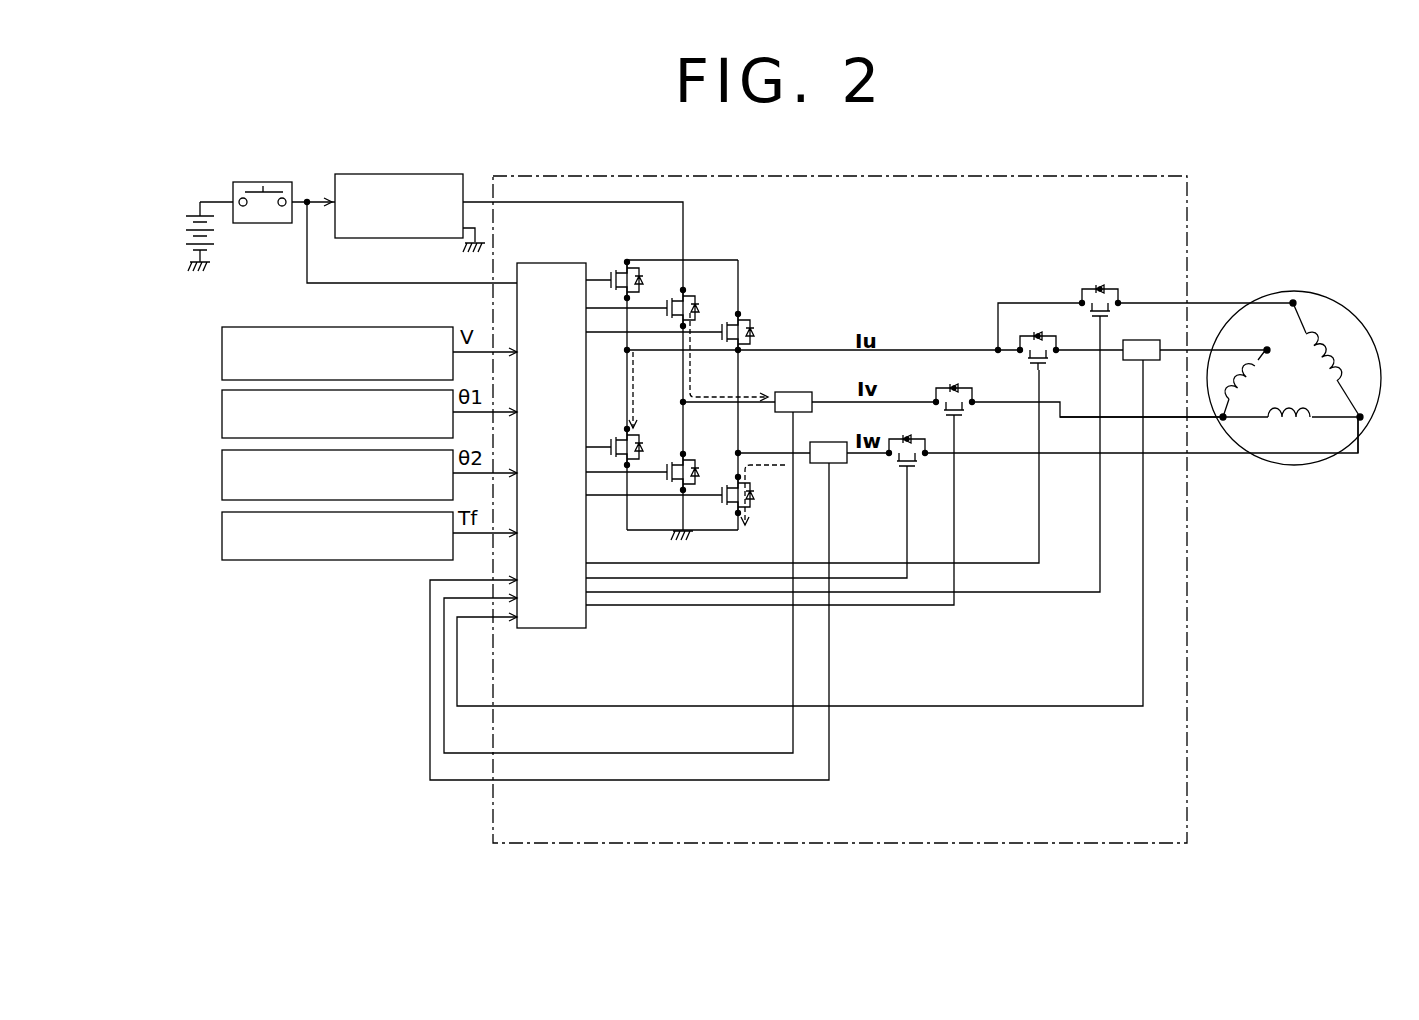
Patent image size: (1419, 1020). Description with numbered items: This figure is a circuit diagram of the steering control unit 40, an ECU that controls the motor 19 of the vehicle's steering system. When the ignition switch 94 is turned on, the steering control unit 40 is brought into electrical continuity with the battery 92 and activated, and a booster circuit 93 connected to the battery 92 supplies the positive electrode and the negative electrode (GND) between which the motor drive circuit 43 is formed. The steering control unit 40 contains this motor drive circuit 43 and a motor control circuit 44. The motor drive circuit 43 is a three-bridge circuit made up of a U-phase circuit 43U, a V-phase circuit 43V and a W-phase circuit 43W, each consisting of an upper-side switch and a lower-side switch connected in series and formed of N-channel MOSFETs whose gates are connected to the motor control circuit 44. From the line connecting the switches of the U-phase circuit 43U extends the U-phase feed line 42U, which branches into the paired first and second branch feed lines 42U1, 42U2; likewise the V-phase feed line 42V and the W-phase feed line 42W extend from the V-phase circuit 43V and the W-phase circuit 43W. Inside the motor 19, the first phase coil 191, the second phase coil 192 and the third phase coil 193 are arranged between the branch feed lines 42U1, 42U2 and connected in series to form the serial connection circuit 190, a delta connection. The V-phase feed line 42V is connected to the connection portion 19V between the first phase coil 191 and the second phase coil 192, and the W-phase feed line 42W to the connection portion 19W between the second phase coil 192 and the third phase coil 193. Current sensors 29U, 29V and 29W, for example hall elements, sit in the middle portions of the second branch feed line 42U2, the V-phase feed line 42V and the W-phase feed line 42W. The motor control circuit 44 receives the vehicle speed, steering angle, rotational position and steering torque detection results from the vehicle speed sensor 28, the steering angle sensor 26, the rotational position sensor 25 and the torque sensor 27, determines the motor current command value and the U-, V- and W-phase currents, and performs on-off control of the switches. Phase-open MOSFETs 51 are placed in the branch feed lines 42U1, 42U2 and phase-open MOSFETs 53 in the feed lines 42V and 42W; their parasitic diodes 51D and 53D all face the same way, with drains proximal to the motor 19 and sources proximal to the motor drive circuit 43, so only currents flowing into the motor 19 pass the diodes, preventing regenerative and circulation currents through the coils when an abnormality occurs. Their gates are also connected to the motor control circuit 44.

The motor 19 is at (1229, 356).
The serial connection circuit 190 is at (1311, 310).
The first phase coil 191 is at (1248, 405).
The second phase coil 192 is at (1296, 432).
The third phase coil 193 is at (1322, 347).
The connection portion 19V is at (1225, 420).
The connection portion 19W is at (1360, 422).
The rotational position sensor 25 is at (222, 473).
The steering angle sensor 26 is at (222, 412).
The torque sensor 27 is at (222, 533).
The vehicle speed sensor 28 is at (222, 352).
The current sensor 29U is at (1153, 362).
The current sensor 29V is at (793, 392).
The current sensor 29W is at (829, 442).
The steering control unit 40 is at (1198, 683).
The U-phase feed line 42U is at (1083, 411).
The first branch feed line 42U1 is at (1163, 300).
The second branch feed line 42U2 is at (1103, 372).
The V-phase feed line 42V is at (963, 428).
The W-phase feed line 42W is at (984, 458).
The motor drive circuit 43 is at (684, 379).
The U-phase circuit 43U is at (628, 390).
The V-phase circuit 43V is at (688, 272).
The W-phase circuit 43W is at (740, 295).
The motor control circuit 44 is at (584, 260).
The phase-open MOSFET 51 is at (1099, 411).
The parasitic diode 51D is at (1038, 332).
The phase-open MOSFET 53 is at (963, 477).
The parasitic diode 53D is at (953, 384).
The battery 92 is at (216, 244).
The booster circuit 93 is at (392, 239).
The ignition switch 94 is at (271, 224).